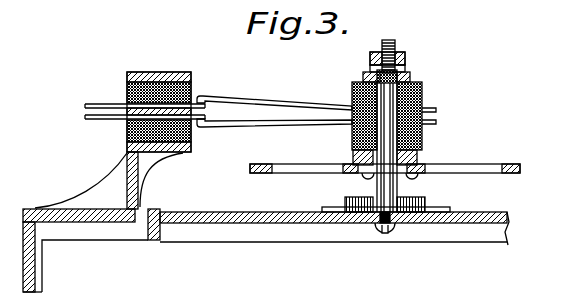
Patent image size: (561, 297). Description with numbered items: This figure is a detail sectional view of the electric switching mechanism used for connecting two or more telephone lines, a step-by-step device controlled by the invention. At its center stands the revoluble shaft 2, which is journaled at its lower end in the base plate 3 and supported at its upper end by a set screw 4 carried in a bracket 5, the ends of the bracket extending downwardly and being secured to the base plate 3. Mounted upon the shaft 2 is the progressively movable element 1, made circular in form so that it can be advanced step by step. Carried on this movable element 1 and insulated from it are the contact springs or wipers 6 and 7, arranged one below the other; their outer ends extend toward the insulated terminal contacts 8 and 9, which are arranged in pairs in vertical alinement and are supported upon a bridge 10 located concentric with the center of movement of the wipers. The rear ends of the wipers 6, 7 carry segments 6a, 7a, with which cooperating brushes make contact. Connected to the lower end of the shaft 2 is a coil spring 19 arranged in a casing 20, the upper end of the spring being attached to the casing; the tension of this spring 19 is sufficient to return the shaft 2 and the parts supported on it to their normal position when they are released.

The progressively movable element 1 is at (487, 165).
The revoluble shaft 2 is at (392, 183).
The base plate 3 is at (472, 213).
The set screw 4 is at (387, 42).
The bracket 5 is at (406, 60).
The contact spring or wiper 6 is at (272, 102).
The contact spring or wiper 7 is at (287, 125).
The segment 6a is at (437, 110).
The segment 7a is at (437, 122).
The insulated terminal contact 8 is at (97, 103).
The insulated terminal contact 9 is at (100, 120).
The bridge 10 is at (165, 72).
The coil spring 19 is at (367, 212).
The casing 20 is at (347, 200).